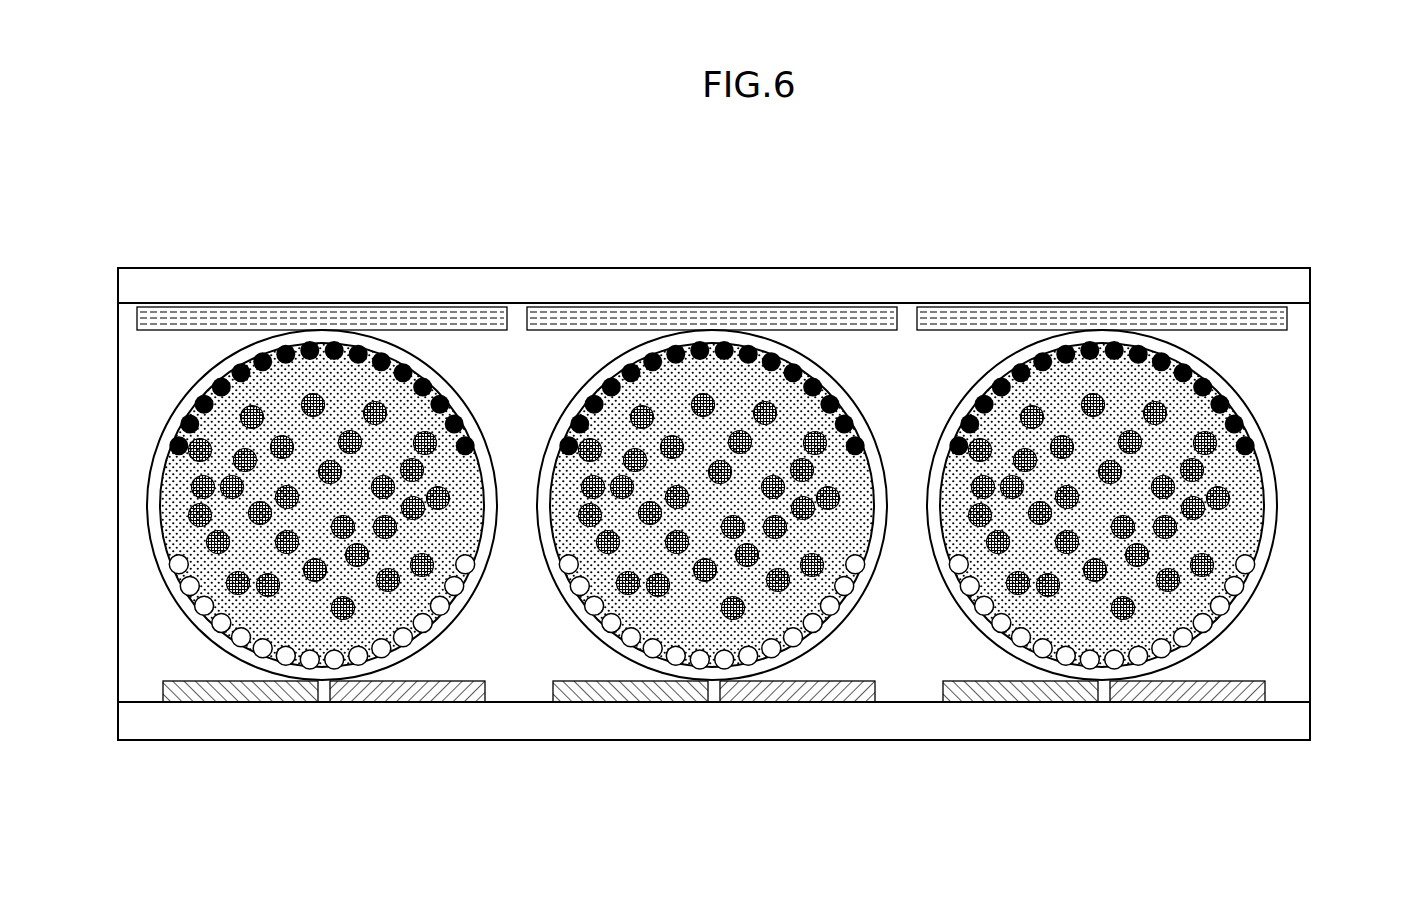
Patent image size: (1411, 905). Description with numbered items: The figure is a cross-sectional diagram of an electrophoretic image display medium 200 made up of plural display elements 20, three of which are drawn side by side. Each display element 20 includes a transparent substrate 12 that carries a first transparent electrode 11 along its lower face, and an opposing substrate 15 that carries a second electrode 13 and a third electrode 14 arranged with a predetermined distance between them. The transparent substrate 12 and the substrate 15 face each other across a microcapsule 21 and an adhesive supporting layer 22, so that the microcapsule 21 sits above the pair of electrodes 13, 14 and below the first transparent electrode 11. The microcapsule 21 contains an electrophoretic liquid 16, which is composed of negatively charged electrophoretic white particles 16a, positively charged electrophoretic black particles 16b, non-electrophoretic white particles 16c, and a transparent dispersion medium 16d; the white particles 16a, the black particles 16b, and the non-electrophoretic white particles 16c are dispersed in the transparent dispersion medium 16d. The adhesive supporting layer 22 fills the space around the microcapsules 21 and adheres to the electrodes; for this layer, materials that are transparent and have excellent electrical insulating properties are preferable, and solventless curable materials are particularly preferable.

The image display medium 200 is at (1243, 197).
The display element 20 is at (372, 268).
The first transparent electrode 11 is at (1109, 305).
The transparent substrate 12 is at (1311, 284).
The second electrode 13 is at (1022, 704).
The third electrode 14 is at (1190, 704).
The substrate 15 is at (1311, 716).
The electrophoretic liquid 16 is at (1268, 507).
The negatively charged electrophoretic white particles 16a is at (1223, 600).
The positively charged electrophoretic black particles 16b is at (1238, 412).
The non-electrophoretic white particles 16c is at (1203, 511).
The transparent dispersion medium 16d is at (1252, 483).
The microcapsule 21 is at (1232, 378).
The adhesive supporting layer 22 is at (1311, 641).